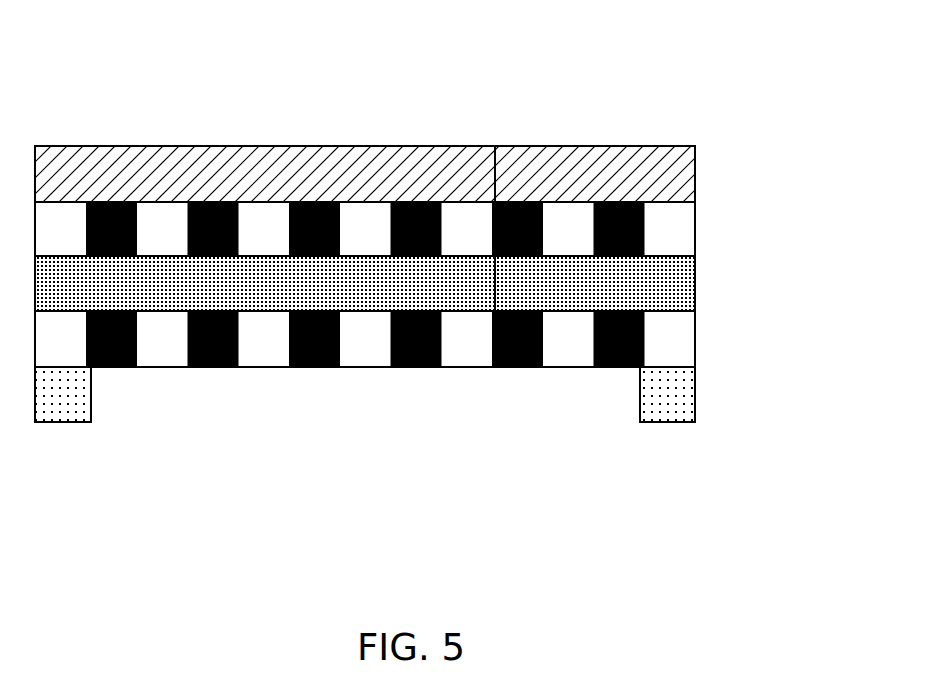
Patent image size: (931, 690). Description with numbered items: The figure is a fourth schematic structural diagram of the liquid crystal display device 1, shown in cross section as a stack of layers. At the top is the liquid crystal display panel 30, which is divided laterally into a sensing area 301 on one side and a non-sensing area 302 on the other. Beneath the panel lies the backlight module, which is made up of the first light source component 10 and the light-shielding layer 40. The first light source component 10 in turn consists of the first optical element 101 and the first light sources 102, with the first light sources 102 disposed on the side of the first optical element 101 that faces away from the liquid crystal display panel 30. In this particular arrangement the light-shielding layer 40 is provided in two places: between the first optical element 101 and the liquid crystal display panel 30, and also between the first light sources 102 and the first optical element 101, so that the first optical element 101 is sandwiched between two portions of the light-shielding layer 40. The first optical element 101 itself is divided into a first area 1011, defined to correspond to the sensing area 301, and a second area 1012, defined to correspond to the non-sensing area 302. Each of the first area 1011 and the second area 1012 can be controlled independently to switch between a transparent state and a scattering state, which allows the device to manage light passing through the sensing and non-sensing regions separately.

The liquid crystal display device 1 is at (355, 63).
The first light source component 10 is at (366, 411).
The first optical element 101 is at (365, 382).
The first area 1011 is at (567, 282).
The second area 1012 is at (357, 285).
The first light sources 102 is at (527, 508).
The liquid crystal display panel 30 is at (369, 127).
The sensing area 301 is at (468, 107).
The non-sensing area 302 is at (443, 173).
The light-shielding layer 40 is at (672, 236).